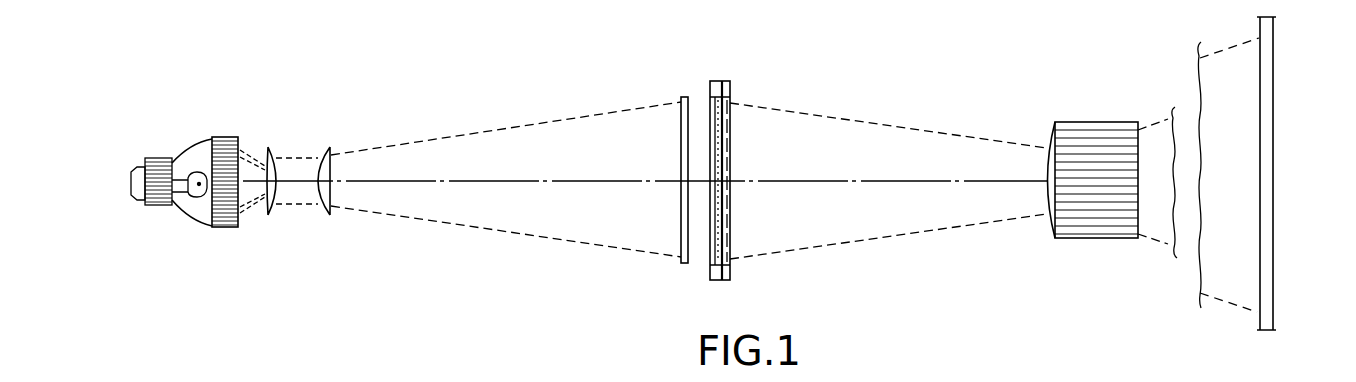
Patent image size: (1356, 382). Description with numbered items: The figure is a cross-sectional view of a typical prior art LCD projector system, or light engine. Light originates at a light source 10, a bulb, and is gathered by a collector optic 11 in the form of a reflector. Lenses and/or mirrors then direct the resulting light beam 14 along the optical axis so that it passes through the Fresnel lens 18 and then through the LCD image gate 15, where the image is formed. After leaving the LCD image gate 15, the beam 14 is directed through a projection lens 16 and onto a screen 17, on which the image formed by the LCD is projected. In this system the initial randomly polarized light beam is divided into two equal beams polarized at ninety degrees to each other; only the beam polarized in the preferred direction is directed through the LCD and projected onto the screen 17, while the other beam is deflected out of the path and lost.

The light source 10 is at (197, 200).
The collector optic 11 is at (201, 143).
The light beam 14 is at (512, 128).
The LCD image gate 15 is at (730, 224).
The projection lens 16 is at (1088, 240).
The screen 17 is at (1273, 230).
The Fresnel lens 18 is at (682, 235).